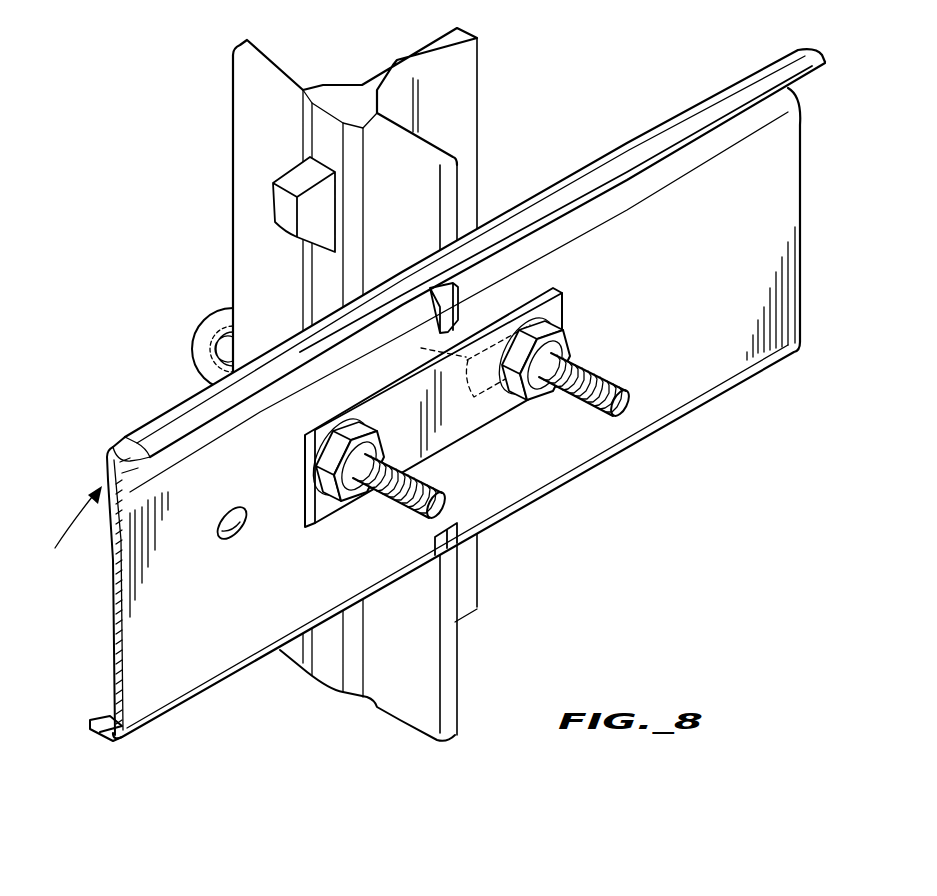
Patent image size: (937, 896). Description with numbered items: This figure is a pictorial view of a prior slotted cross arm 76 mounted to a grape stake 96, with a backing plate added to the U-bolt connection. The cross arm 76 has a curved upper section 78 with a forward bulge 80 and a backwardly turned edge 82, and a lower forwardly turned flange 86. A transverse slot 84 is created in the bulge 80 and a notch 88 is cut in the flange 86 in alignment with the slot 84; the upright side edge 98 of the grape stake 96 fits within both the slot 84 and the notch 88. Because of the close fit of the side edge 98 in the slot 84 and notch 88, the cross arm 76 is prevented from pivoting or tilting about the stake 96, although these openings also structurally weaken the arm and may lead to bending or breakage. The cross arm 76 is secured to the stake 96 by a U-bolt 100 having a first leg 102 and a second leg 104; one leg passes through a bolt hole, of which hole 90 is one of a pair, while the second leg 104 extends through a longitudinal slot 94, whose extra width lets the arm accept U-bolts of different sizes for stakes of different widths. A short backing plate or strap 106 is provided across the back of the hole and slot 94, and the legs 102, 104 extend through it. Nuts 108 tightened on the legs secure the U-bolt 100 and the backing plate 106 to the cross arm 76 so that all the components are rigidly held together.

The slotted cross arm 76 is at (727, 363).
The curved upper section 78 is at (60, 522).
The forward bulge 80 is at (110, 444).
The backwardly turned edge 82 is at (178, 433).
The transverse slot 84 is at (450, 312).
The lower forwardly turned flange 86 is at (103, 715).
The notch 88 is at (458, 550).
The bolt hole 90 is at (237, 540).
The longitudinal slot 94 is at (457, 361).
The grape stake 96 is at (245, 117).
The upright side edge 98 is at (445, 197).
The U-bolt 100 is at (194, 343).
The first leg 102 is at (422, 484).
The second leg 104 is at (599, 372).
The backing plate 106 is at (452, 413).
The nuts 108 is at (323, 492).